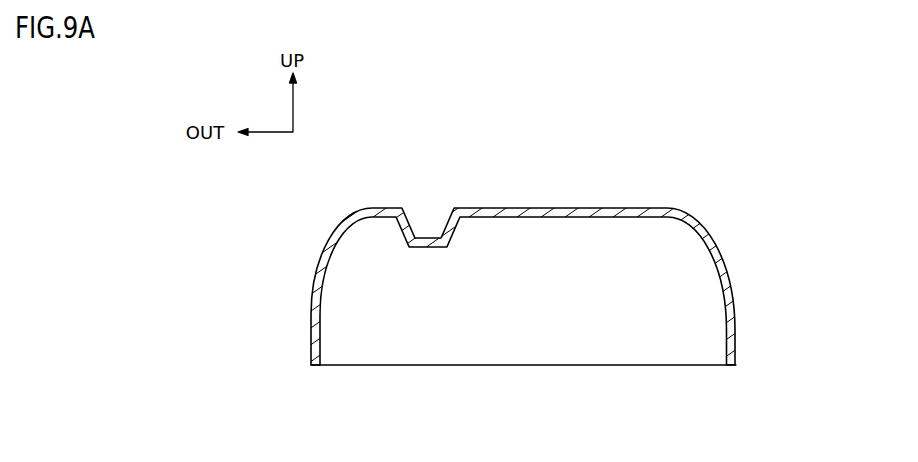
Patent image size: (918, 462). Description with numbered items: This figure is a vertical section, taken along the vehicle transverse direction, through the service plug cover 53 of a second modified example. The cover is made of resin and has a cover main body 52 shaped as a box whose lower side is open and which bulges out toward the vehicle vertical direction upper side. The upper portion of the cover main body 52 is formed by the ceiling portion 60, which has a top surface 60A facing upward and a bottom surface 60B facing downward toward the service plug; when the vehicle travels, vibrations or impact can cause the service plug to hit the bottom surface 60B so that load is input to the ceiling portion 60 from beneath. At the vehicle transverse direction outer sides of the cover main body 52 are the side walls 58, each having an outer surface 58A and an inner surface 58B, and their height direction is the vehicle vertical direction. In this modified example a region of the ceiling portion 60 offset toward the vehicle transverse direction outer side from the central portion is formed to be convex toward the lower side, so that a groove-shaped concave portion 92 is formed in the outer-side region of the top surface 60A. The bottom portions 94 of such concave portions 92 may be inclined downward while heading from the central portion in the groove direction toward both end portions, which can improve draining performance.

The cover main body 52 is at (709, 228).
The service plug cover 53 is at (459, 204).
The side walls 58 is at (522, 355).
The outer surfaces of the side walls 58A is at (312, 342).
The inner surfaces of the side walls 58B is at (322, 345).
The ceiling portion 60 is at (563, 177).
The top surface 60A is at (563, 208).
The bottom surface 60B is at (527, 219).
The concave portion 92 is at (428, 200).
The bottom portions 94 is at (430, 237).